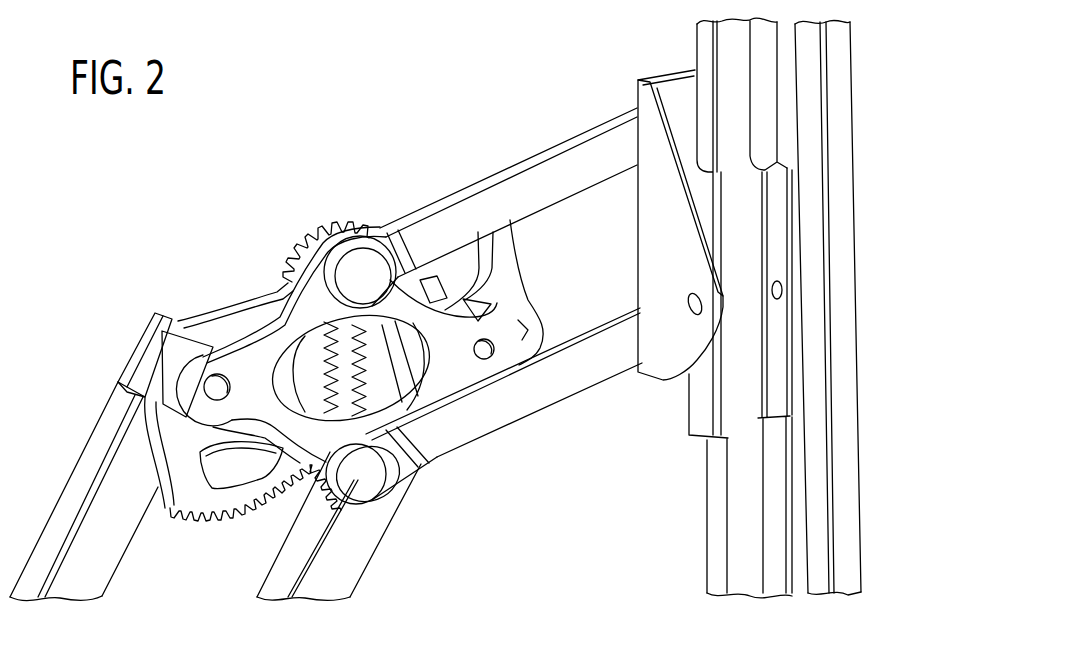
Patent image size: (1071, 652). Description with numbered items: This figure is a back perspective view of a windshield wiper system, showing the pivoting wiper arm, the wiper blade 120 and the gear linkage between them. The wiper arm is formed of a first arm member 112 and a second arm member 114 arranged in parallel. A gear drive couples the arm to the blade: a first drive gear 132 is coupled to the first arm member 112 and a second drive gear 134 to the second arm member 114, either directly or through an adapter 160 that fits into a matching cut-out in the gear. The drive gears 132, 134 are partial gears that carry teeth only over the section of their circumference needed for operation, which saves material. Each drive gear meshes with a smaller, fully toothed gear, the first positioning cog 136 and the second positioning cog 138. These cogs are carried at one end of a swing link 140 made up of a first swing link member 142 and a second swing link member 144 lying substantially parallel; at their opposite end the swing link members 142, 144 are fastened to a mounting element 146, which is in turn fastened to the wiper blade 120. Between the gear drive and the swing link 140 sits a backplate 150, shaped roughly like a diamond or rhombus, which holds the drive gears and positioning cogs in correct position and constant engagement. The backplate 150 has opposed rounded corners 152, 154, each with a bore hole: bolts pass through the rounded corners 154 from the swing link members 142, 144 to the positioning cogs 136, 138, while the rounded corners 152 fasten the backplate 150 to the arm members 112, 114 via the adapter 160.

The first arm member 112 is at (347, 567).
The second arm member 114 is at (95, 567).
The wiper blade 120 is at (837, 123).
The first drive gear 132 is at (503, 287).
The second drive gear 134 is at (185, 512).
The first positioning cog 136 is at (347, 220).
The second positioning cog 138 is at (307, 497).
The swing link 140 is at (549, 100).
The first swing link member 142 is at (528, 188).
The second swing link member 144 is at (537, 390).
The mounting element 146 is at (673, 73).
The backplate 150 is at (447, 360).
The rounded corners 152 is at (200, 335).
The rounded corners 154 is at (280, 277).
The first adapter 160 is at (147, 350).